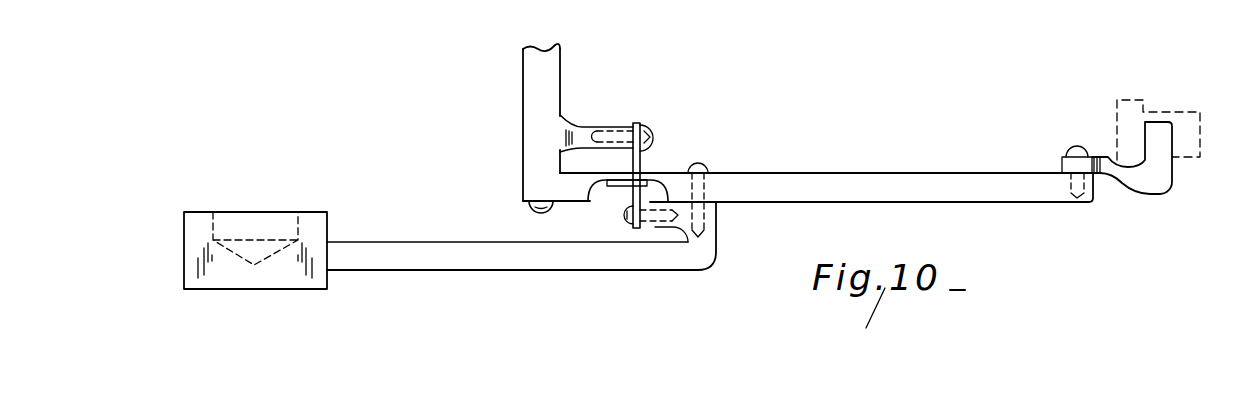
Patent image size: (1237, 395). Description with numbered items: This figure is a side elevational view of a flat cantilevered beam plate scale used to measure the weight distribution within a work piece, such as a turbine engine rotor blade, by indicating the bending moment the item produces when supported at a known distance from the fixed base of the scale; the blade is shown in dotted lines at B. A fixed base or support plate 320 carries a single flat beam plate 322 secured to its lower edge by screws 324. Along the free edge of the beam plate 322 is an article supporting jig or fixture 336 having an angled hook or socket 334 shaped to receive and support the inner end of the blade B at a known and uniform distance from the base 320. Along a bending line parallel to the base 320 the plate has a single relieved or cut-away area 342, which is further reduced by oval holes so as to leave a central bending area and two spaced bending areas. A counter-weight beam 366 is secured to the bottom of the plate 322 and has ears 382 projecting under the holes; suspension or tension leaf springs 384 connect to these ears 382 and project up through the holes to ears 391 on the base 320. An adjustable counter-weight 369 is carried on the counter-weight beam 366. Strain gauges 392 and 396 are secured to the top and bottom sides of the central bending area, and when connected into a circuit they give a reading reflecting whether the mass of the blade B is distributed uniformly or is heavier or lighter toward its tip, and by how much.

The fixed base or support plate 320 is at (548, 75).
The flat beam plate 322 is at (900, 187).
The screws 324 is at (525, 202).
The angled hook or socket 334 is at (1153, 180).
The article supporting jig or fixture 336 is at (1062, 163).
The relieved or cut-away area 342 is at (597, 190).
The counter-weight beam 366 is at (457, 257).
The adjustable counter-weight 369 is at (263, 217).
The ears 382 is at (677, 222).
The suspension or tension leaf springs 384 is at (640, 158).
The ears 391 is at (597, 128).
The strain gauge 392 is at (607, 168).
The strain gauge 396 is at (603, 183).
The blade B is at (1190, 110).